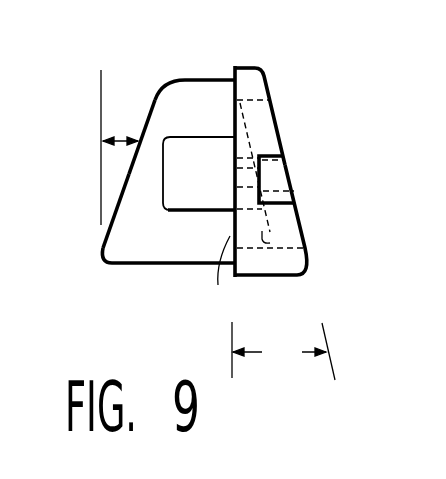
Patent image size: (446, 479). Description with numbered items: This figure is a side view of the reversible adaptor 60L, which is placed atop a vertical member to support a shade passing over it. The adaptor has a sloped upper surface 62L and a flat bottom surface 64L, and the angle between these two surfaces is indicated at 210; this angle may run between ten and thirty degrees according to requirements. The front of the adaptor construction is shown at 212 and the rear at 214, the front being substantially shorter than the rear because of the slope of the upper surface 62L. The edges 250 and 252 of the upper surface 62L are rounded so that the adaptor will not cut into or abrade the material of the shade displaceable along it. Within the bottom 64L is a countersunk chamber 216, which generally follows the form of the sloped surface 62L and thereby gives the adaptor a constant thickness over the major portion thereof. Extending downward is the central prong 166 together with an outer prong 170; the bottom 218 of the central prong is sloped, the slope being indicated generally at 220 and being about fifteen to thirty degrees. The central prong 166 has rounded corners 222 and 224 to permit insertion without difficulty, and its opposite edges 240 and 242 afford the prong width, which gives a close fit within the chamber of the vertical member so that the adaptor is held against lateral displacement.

The edge of central prong 240 is at (213, 261).
The rounded corner 224 is at (163, 87).
The bottom of central prong 218 is at (128, 163).
The central prong 166 is at (124, 219).
The rounded corner 222 is at (101, 256).
The edge of central prong 242 is at (111, 268).
The prong 170 is at (177, 180).
The slope of prong bottom 220 is at (120, 138).
The front of adaptor 212 is at (240, 67).
The rounded edge of upper surface 252 is at (262, 69).
The rounded edge of upper surface 250 is at (308, 267).
The rear of adaptor 214 is at (300, 276).
The countersunk chamber 216 is at (257, 232).
The sloped upper surface 62L is at (294, 205).
The adaptor 60L is at (284, 241).
The flat bottom surface 64L is at (232, 278).
The angle between surfaces 210 is at (283, 351).